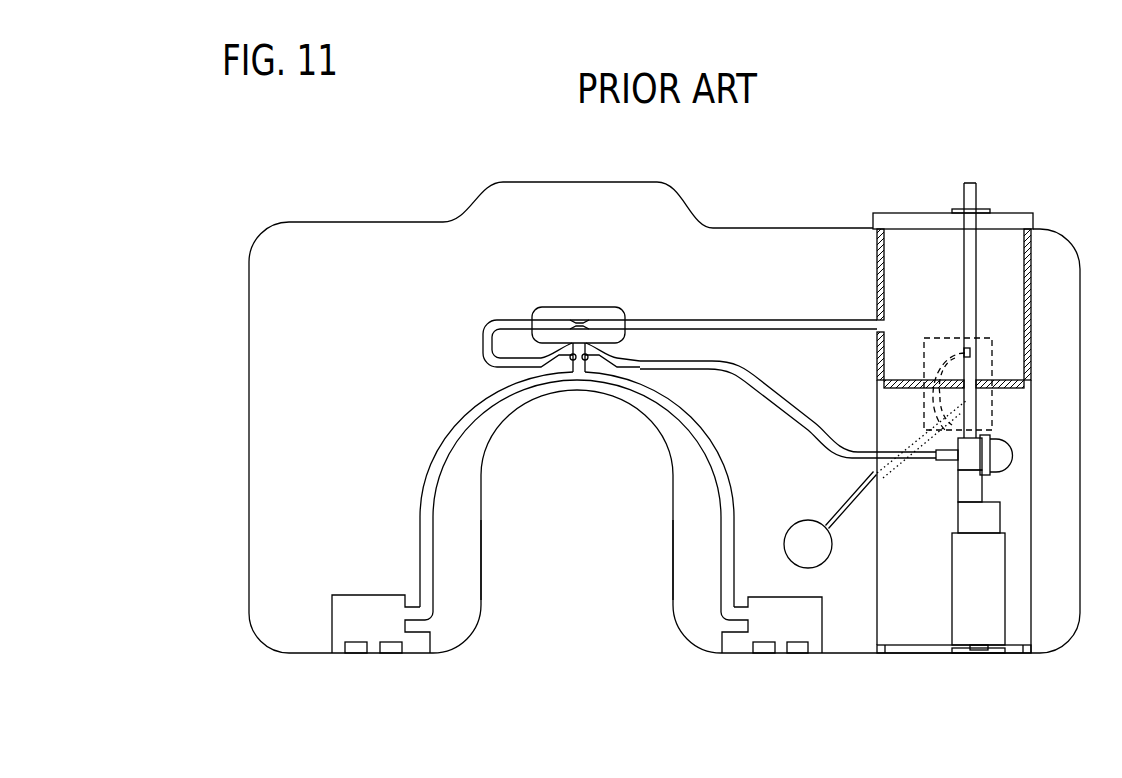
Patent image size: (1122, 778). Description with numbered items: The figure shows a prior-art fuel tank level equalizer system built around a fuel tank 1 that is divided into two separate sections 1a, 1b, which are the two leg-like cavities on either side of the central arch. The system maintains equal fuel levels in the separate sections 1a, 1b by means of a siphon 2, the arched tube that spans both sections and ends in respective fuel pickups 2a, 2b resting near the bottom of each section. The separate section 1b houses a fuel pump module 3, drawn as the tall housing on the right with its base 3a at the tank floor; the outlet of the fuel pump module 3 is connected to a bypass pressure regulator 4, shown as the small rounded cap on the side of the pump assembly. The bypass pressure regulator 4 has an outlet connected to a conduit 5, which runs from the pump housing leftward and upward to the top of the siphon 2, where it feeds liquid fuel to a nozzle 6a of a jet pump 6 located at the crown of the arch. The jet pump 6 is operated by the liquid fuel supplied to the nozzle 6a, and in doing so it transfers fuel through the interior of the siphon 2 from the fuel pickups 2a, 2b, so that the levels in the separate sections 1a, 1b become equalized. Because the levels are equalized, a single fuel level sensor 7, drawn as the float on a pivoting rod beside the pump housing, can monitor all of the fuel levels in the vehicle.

The fuel tank 1 is at (582, 180).
The separate section 1a is at (481, 552).
The separate section 1b is at (673, 552).
The siphon 2 is at (447, 435).
The fuel pickup 2a is at (417, 647).
The fuel pickup 2b is at (737, 647).
The fuel pump module 3 is at (1008, 568).
The drive unit base 3a is at (978, 654).
The bypass pressure regulator 4 is at (1003, 452).
The conduit 5 is at (820, 428).
The jet pump 6 is at (605, 305).
The nozzle 6a is at (585, 322).
The fuel level sensor 7 is at (853, 493).